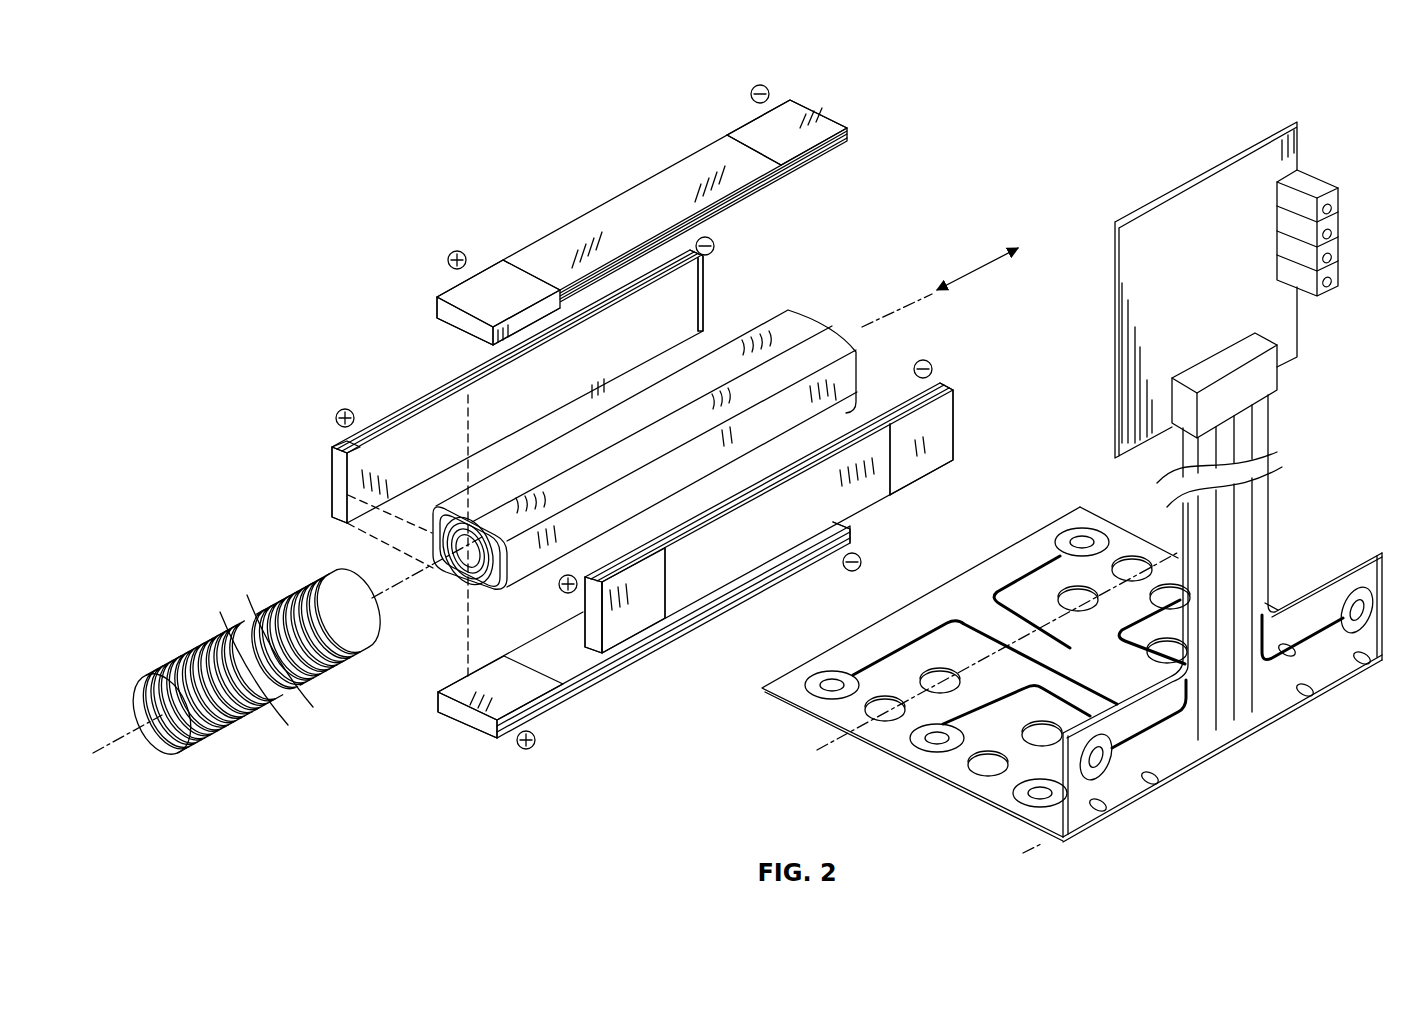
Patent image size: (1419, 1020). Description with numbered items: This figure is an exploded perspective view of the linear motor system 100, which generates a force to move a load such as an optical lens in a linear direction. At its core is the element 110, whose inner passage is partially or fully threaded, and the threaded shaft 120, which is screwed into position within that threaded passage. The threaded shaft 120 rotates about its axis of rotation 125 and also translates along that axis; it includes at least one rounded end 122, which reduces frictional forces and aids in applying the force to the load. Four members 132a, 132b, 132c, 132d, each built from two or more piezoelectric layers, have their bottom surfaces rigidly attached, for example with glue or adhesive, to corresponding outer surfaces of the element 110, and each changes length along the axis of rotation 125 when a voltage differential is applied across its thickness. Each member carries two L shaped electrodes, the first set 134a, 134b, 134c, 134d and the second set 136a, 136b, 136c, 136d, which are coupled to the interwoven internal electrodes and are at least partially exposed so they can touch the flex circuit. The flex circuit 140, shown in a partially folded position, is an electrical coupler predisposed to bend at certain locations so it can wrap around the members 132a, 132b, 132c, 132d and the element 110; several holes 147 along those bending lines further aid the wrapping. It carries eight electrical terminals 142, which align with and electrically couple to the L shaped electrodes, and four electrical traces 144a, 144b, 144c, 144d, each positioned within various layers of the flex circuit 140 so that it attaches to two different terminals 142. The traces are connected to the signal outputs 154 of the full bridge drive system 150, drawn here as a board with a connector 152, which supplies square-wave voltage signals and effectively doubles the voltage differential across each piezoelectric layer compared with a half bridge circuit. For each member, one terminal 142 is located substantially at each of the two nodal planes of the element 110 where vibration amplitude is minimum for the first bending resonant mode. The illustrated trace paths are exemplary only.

The linear motor system 100 is at (330, 190).
The element with a threaded passage 110 is at (808, 322).
The threaded shaft 120 is at (307, 603).
The rounded end 122 is at (150, 694).
The axis of rotation 125 is at (977, 270).
The member 132a is at (722, 168).
The member 132b is at (858, 500).
The member 132c is at (606, 700).
The member 132d is at (420, 392).
The L shaped electrode 134a is at (460, 290).
The L shaped electrode 134b is at (640, 630).
The L shaped electrode 134c is at (462, 716).
The L shaped electrode 134d is at (333, 480).
The L shaped electrode 136a is at (815, 148).
The L shaped electrode 136b is at (950, 455).
The L shaped electrode 136c is at (858, 528).
The L shaped electrode 136d is at (708, 292).
The flex circuit 140 is at (860, 647).
The electrical terminal 142 is at (1078, 540).
The electrical trace 144a is at (935, 748).
The electrical trace 144b is at (1155, 628).
The electrical trace 144c is at (862, 668).
The electrical trace 144d is at (1028, 565).
The hole 147 is at (930, 680).
The full bridge drive system 150 is at (1300, 152).
The connector 152 is at (1330, 240).
The connector 154 is at (1286, 405).